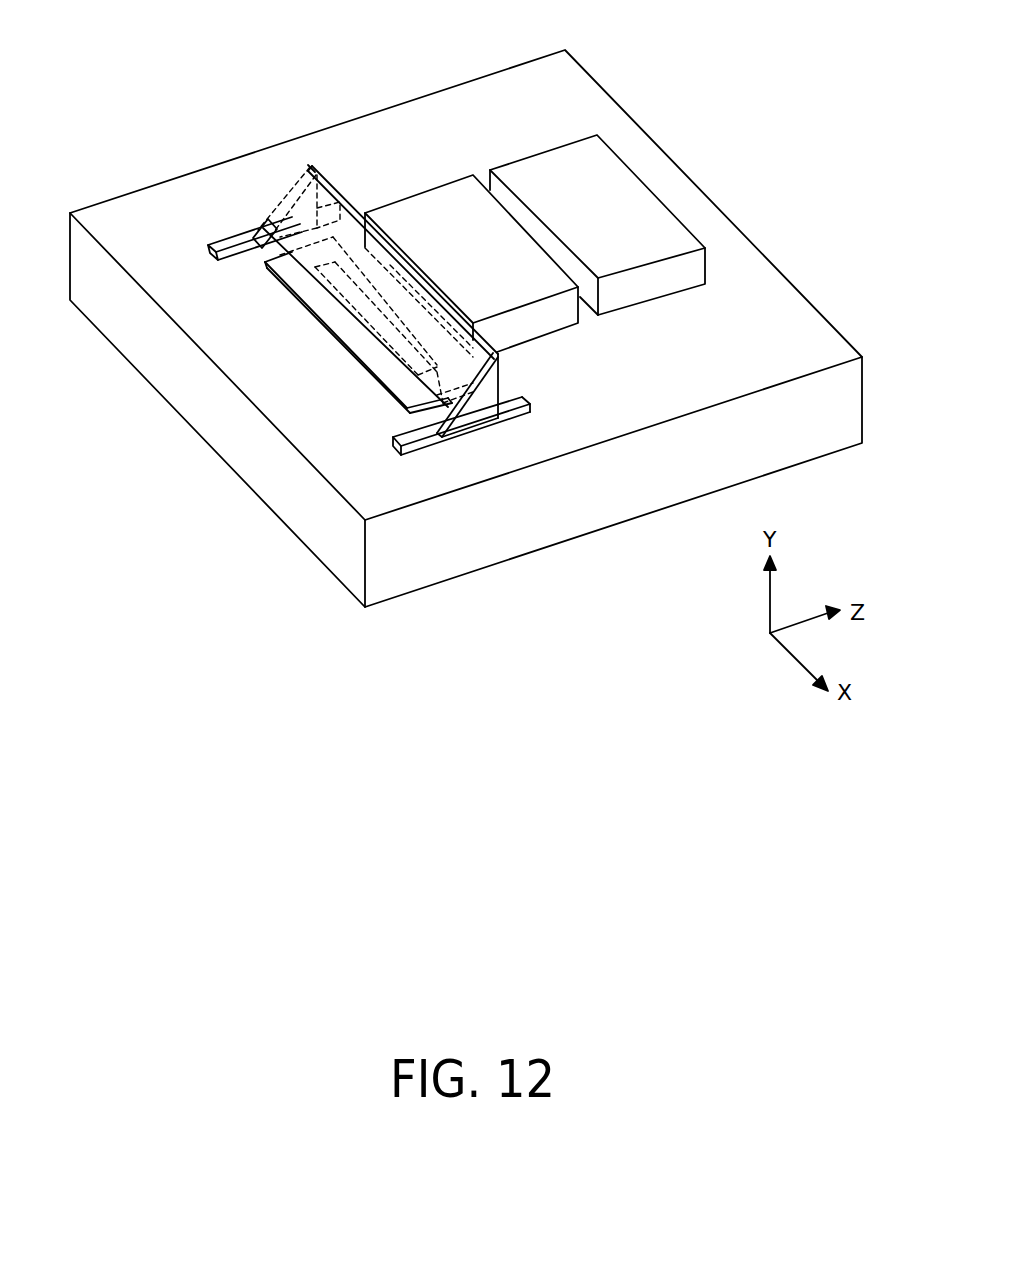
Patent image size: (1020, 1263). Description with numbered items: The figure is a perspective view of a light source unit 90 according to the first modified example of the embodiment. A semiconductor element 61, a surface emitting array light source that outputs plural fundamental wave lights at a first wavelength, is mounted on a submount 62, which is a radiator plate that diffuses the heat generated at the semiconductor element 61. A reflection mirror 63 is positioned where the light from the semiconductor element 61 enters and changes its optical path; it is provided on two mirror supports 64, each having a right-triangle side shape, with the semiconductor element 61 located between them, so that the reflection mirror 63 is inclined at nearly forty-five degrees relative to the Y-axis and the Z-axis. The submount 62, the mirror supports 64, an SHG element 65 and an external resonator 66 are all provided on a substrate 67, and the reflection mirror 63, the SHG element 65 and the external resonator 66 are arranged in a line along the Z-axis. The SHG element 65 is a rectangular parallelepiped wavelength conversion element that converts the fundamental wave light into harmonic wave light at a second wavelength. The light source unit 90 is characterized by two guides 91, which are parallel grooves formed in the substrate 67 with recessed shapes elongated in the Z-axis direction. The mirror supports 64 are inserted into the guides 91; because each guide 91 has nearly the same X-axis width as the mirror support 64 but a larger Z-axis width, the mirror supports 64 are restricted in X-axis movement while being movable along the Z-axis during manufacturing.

The light source unit 90 is at (293, 90).
The guide 91 is at (217, 252).
The semiconductor element 61 is at (358, 298).
The submount 62 is at (367, 345).
The reflection mirror 63 is at (488, 372).
The mirror support 64 is at (268, 223).
The SHG element 65 is at (424, 217).
The external resonator 66 is at (620, 203).
The substrate 67 is at (770, 300).